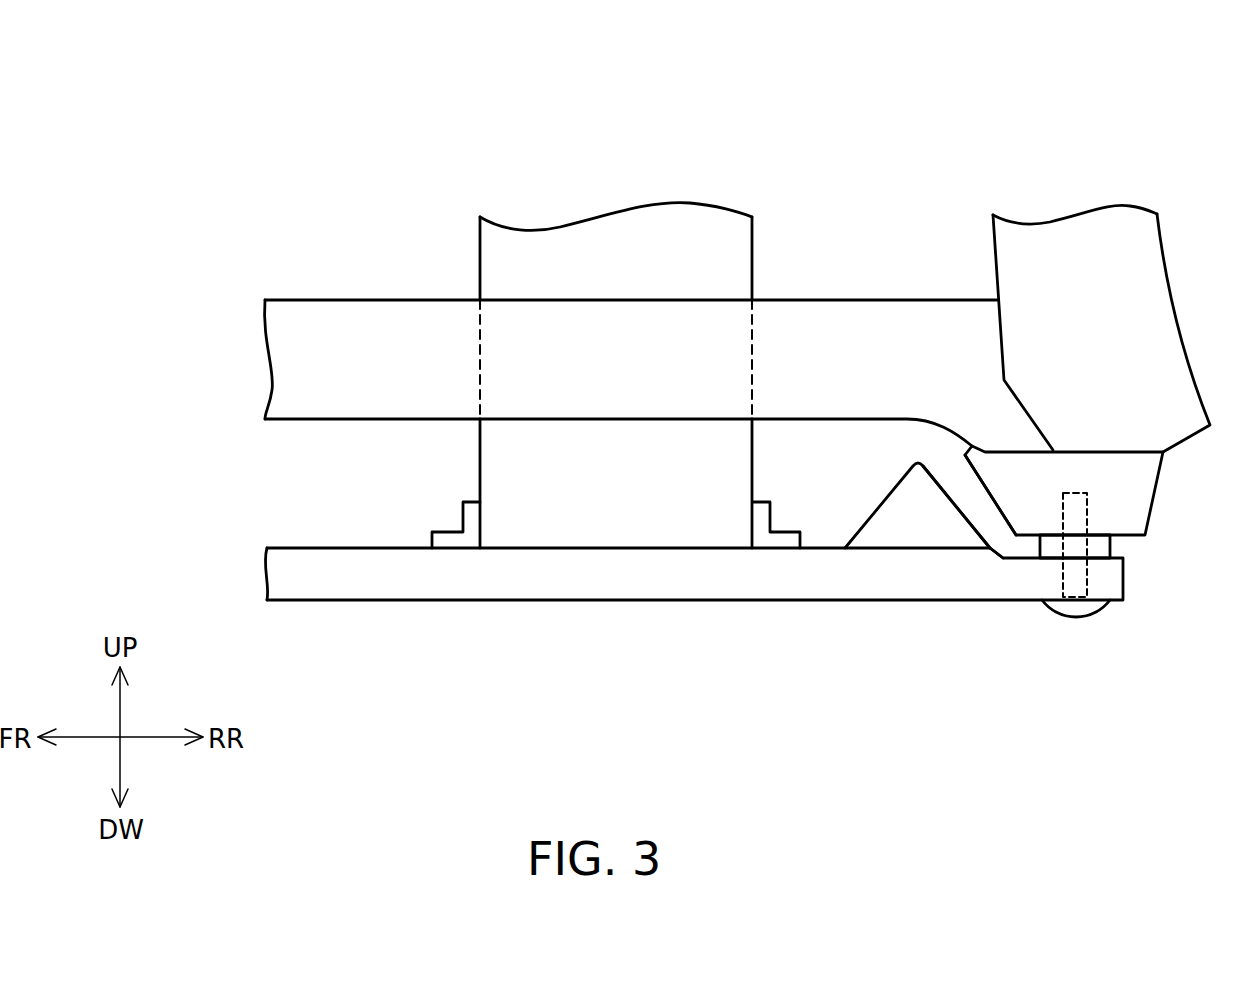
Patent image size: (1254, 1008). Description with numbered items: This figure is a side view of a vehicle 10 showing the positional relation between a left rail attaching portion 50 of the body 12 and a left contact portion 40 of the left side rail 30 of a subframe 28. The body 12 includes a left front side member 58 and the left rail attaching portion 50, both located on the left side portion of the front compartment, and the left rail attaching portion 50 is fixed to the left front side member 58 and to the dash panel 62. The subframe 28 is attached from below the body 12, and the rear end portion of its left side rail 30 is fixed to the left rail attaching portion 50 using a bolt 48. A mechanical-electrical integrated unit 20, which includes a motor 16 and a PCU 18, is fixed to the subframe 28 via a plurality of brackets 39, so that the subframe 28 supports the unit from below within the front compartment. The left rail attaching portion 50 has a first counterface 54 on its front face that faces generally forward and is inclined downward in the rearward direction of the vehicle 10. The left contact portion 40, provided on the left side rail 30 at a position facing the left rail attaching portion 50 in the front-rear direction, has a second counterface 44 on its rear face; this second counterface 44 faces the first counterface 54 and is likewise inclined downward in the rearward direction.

The vehicle 10 is at (1155, 107).
The body 12 is at (631, 297).
The motor 16 is at (616, 437).
The PCU 18 is at (635, 540).
The mechanical-electrical integrated unit 20 is at (616, 462).
The subframe 28 is at (694, 637).
The left side rail 30 is at (812, 582).
The brackets 39 is at (457, 538).
The left contact portion 40 is at (907, 523).
The second counterface 44 is at (980, 520).
The bolt 48 is at (1088, 580).
The left rail attaching portion 50 is at (1090, 558).
The first counterface 54 is at (1004, 516).
The left front side member 58 is at (313, 315).
The dash panel 62 is at (1075, 227).